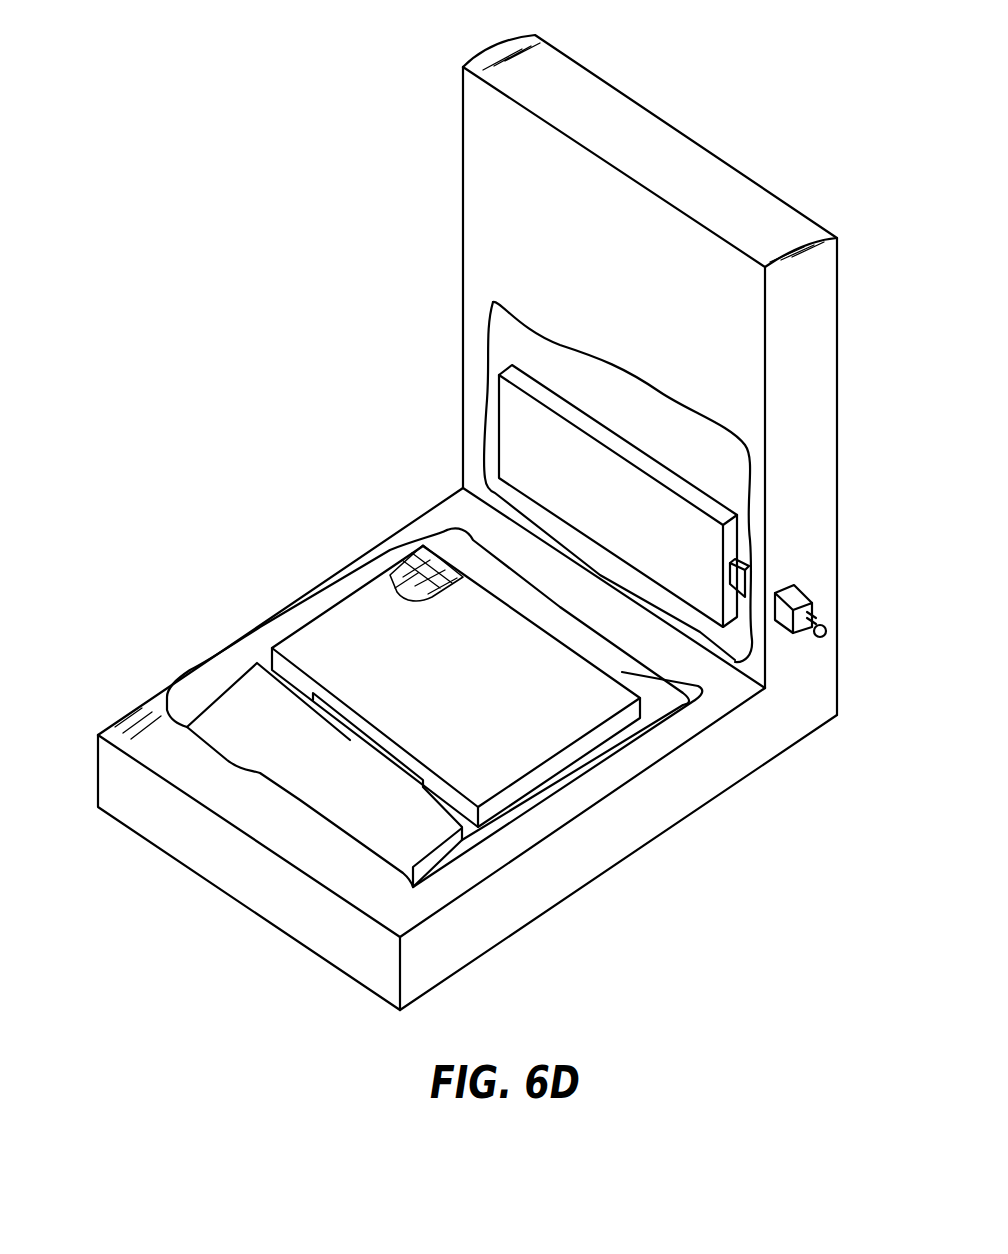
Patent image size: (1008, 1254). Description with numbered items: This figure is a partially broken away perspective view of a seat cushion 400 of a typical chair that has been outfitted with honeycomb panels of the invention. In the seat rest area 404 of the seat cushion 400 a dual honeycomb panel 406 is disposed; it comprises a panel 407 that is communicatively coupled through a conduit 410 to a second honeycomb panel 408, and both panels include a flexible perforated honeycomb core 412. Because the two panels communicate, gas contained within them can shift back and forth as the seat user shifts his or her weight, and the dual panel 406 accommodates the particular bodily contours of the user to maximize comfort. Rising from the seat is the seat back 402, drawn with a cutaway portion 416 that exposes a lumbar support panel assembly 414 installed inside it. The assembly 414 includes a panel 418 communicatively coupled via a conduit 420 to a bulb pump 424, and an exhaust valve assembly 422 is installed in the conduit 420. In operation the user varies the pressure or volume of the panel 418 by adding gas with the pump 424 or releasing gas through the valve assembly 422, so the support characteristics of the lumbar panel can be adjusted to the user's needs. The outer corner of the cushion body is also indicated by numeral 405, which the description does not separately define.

The seat cushion 400 is at (203, 322).
The seat back 402 is at (490, 198).
The seat rest area 404 is at (713, 697).
The base housing edge 405 is at (175, 689).
The dual honeycomb panel 406 is at (231, 663).
The panel 407 is at (397, 838).
The second honeycomb panel 408 is at (530, 743).
The conduit 410 is at (355, 736).
The flexible perforated honeycomb core 412 is at (410, 563).
The lumbar support panel assembly 414 is at (495, 433).
The cutaway portion 416 is at (493, 302).
The panel 418 is at (683, 518).
The conduit 420 is at (737, 578).
The exhaust valve assembly 422 is at (809, 603).
The bulb pump 424 is at (827, 633).